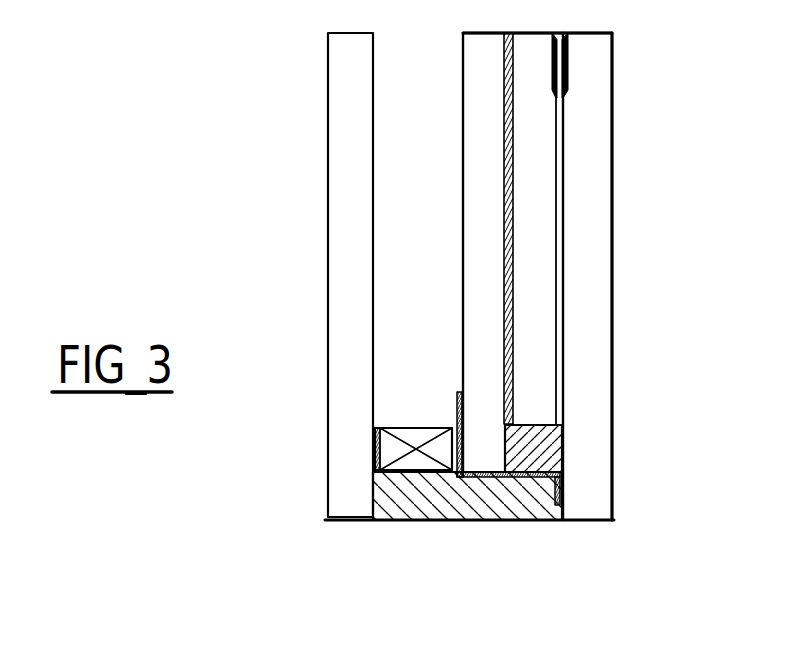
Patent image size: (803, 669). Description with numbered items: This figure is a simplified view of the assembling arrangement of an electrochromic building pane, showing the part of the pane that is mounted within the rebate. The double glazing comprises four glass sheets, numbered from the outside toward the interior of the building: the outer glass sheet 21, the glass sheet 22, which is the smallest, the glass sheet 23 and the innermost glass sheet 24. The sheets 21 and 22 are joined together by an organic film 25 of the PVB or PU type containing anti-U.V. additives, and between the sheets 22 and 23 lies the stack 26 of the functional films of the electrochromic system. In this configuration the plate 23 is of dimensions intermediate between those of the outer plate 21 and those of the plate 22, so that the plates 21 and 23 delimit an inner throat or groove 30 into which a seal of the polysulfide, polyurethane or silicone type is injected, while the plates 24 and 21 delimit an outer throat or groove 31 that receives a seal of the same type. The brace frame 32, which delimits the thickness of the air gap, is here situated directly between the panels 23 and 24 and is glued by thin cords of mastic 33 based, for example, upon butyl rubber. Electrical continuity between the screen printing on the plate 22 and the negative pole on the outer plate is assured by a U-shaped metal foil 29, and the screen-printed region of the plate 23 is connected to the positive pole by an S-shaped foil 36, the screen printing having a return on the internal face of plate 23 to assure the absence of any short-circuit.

The glass sheet 21 is at (592, 313).
The glass sheet 22 is at (540, 193).
The glass sheet 23 is at (492, 147).
The glass sheet 24 is at (342, 243).
The organic film 25 is at (558, 375).
The stack of functional films 26 is at (508, 251).
The U-shaped metal foil 29 is at (567, 59).
The inner throat or groove 30 is at (547, 440).
The outer throat or groove 31 is at (488, 502).
The brace frame 32 is at (413, 433).
The thin cord of mastic 33 is at (375, 427).
The foil 36 is at (532, 485).